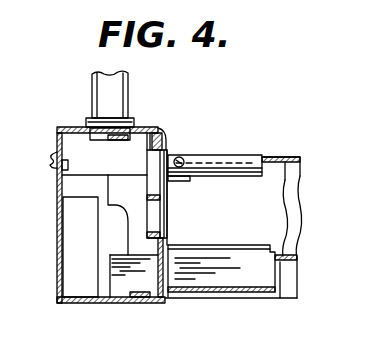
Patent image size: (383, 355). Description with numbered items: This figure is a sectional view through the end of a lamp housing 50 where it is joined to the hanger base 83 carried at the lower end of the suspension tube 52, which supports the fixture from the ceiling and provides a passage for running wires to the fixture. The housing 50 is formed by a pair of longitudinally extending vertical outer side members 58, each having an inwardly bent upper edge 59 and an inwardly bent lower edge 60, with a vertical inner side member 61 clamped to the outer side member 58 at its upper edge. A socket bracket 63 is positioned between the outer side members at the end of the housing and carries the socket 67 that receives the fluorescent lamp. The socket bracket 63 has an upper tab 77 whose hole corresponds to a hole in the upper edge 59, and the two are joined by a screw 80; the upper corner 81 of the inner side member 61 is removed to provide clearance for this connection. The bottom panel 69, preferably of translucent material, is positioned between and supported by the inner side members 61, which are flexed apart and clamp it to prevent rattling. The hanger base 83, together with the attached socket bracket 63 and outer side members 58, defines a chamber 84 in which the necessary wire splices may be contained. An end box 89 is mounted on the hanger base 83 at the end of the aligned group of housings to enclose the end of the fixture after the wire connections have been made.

The housing 50 is at (208, 306).
The suspension tube 52 is at (125, 92).
The outer side member 58 is at (299, 171).
The upper edge 59 is at (218, 160).
The lower edge 60 is at (285, 293).
The inner side member 61 is at (275, 223).
The socket bracket 63 is at (166, 142).
The socket 67 is at (152, 152).
The bottom panel 69 is at (242, 279).
The upper tab 77 is at (180, 180).
The screw 80 is at (183, 160).
The upper corner 81 is at (188, 181).
The hanger base 83 is at (78, 124).
The chamber 84 is at (90, 166).
The end box 89 is at (55, 299).